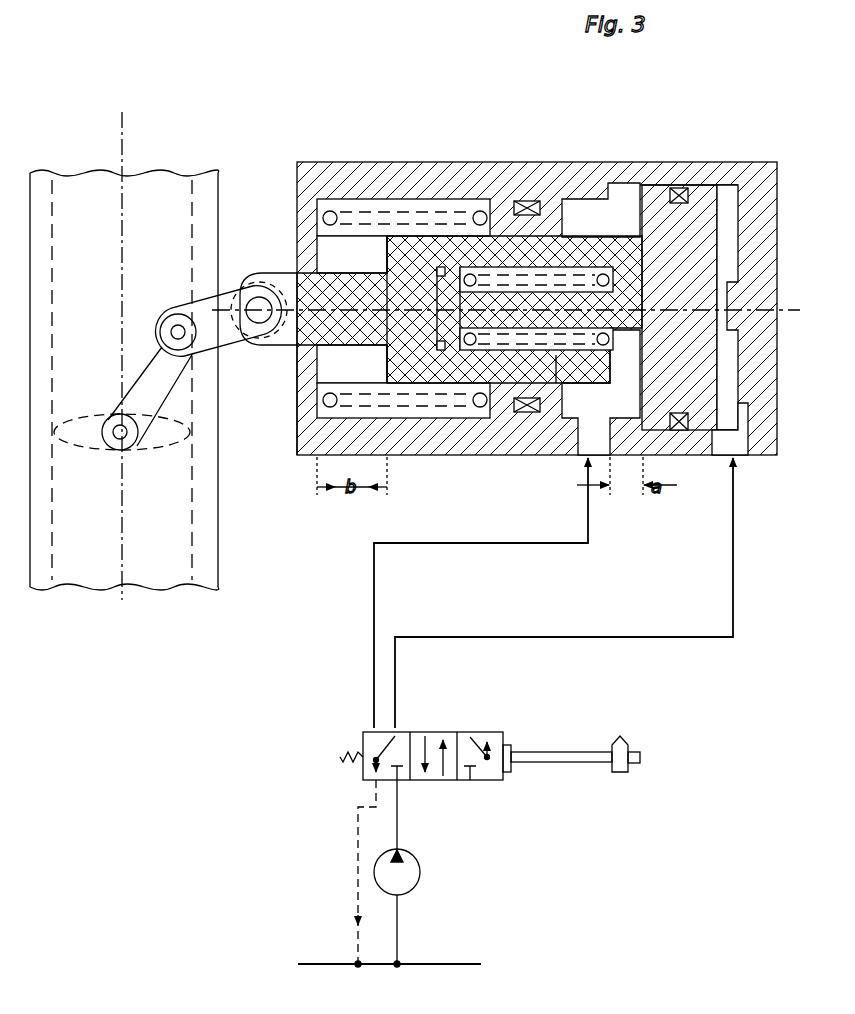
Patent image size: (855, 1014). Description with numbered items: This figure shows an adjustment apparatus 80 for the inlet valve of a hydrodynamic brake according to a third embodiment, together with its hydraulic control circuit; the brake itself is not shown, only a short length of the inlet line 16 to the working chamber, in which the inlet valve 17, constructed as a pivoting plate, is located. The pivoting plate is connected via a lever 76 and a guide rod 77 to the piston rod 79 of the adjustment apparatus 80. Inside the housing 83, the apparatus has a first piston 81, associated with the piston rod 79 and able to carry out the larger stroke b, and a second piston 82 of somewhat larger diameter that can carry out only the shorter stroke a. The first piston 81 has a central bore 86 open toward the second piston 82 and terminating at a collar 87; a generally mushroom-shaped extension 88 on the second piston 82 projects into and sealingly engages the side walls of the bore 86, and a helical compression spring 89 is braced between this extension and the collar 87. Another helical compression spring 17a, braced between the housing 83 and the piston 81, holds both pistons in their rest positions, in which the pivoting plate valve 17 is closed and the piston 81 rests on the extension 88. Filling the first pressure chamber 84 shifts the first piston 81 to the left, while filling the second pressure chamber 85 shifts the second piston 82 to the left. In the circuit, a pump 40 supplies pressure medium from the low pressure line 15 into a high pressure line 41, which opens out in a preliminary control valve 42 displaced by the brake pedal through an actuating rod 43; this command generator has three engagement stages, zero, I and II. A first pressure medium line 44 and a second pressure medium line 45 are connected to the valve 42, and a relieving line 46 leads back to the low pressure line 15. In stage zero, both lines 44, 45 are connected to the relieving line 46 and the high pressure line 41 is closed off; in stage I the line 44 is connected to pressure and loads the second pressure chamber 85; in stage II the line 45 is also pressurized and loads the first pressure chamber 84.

The low pressure line 15 is at (340, 964).
The inlet line 16 is at (210, 552).
The inlet valve 17 is at (148, 438).
The helical compression spring 17a is at (302, 411).
The pump 40 is at (410, 878).
The high pressure line 41 is at (397, 818).
The preliminary control valve 42 is at (478, 776).
The actuating rod 43 is at (570, 760).
The first pressure medium line 44 is at (733, 587).
The second pressure medium line 45 is at (374, 590).
The relieving line 46 is at (356, 820).
The lever 76 is at (133, 397).
The guide rod 77 is at (243, 298).
The piston rod 79 is at (284, 292).
The adjustment apparatus 80 is at (355, 158).
The first piston 81 is at (511, 200).
The second piston 82 is at (648, 195).
The housing 83 is at (410, 168).
The first pressure chamber 84 is at (581, 210).
The second pressure chamber 85 is at (732, 197).
The central bore 86 is at (502, 350).
The collar 87 is at (619, 345).
The mushroom-shaped extension 88 is at (448, 340).
The helical compression spring 89 is at (556, 383).